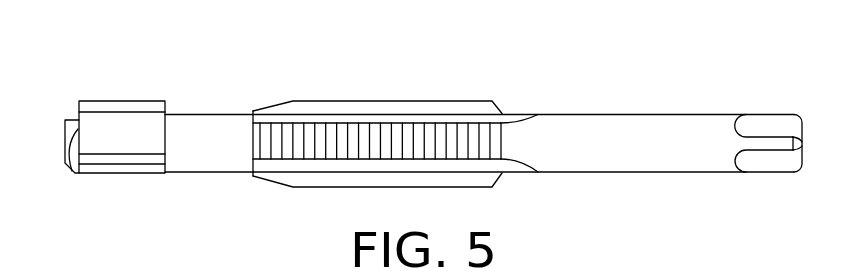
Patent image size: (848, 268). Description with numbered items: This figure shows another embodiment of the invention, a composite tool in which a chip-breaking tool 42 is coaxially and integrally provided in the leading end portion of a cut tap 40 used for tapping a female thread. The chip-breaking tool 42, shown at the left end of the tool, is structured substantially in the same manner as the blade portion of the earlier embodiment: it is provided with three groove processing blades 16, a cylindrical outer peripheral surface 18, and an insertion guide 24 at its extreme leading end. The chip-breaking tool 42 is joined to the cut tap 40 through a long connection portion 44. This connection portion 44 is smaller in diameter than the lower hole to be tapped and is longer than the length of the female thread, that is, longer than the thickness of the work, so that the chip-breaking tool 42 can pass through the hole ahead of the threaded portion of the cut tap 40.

The groove processing blade 16 is at (112, 105).
The cylindrical outer peripheral surface 18 is at (100, 140).
The insertion guide 24 is at (54, 139).
The cut tap 40 is at (517, 57).
The chip-breaking tool 42 is at (126, 129).
The connection portion 44 is at (216, 155).